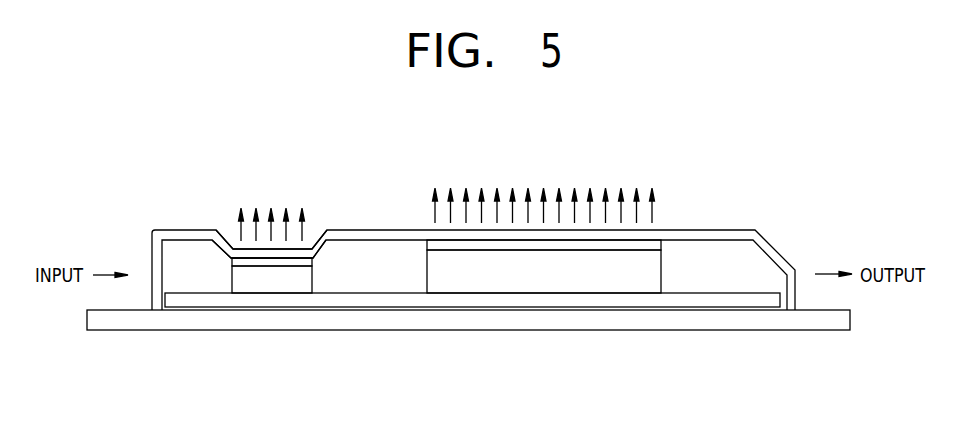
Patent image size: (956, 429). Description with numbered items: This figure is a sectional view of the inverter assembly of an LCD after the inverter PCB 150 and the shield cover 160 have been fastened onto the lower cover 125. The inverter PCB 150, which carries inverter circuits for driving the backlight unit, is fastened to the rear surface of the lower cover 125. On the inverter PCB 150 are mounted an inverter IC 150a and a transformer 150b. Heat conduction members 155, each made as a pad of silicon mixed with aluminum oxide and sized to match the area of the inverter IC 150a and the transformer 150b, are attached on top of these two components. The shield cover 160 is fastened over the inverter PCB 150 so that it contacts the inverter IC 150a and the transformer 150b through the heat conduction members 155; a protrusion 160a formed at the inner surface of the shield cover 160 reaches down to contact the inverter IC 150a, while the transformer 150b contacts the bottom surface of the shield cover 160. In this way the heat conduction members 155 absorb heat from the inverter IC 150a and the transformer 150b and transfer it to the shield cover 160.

The lower cover 125 is at (708, 330).
The inverter PCB 150 is at (612, 303).
The inverter IC 150a is at (299, 287).
The transformer 150b is at (537, 277).
The heat conduction members 155 is at (246, 262).
The shield cover 160 is at (378, 237).
The protrusion 160a is at (265, 252).